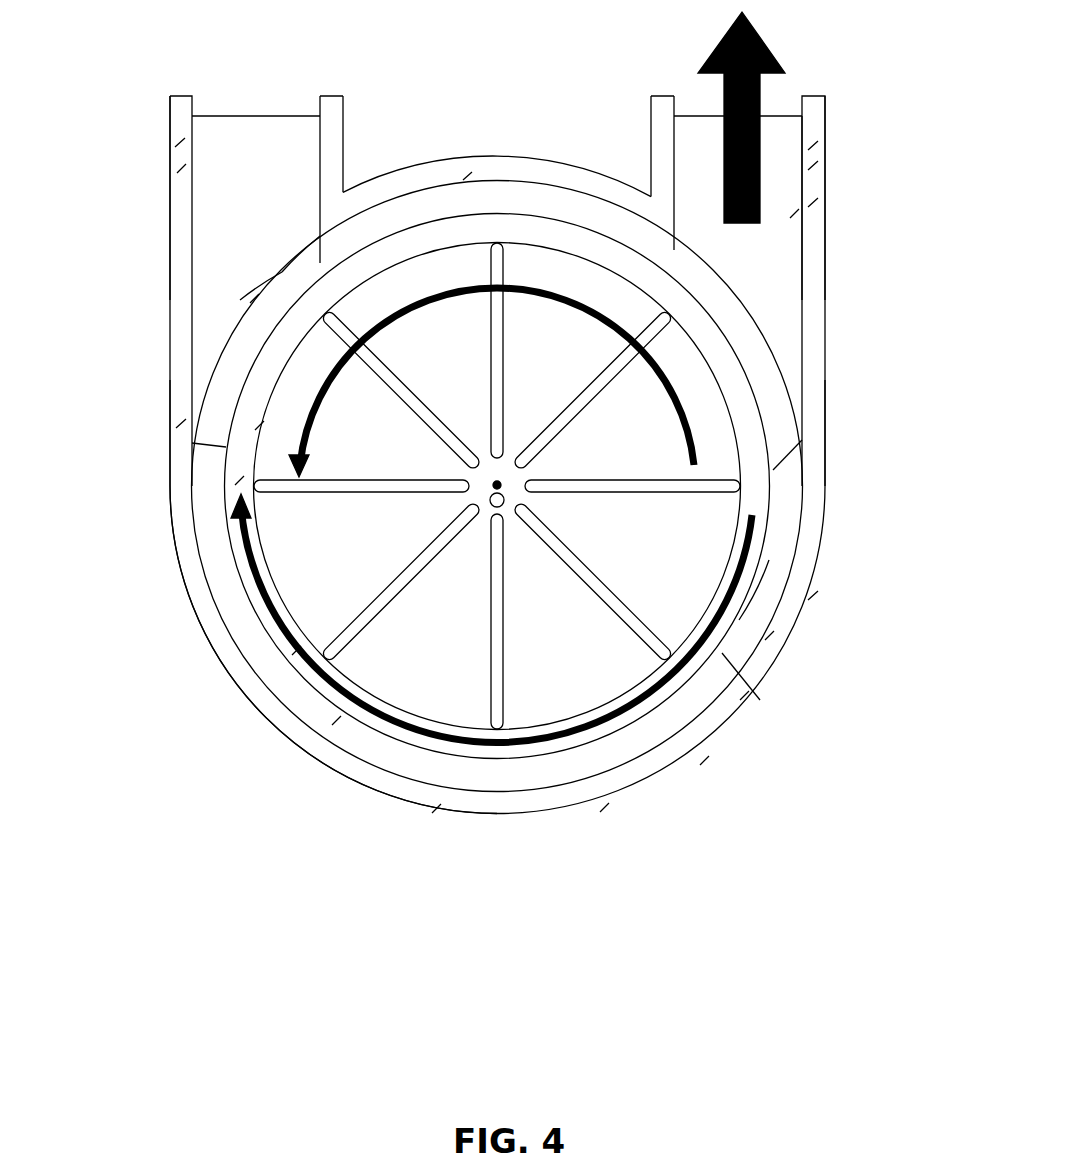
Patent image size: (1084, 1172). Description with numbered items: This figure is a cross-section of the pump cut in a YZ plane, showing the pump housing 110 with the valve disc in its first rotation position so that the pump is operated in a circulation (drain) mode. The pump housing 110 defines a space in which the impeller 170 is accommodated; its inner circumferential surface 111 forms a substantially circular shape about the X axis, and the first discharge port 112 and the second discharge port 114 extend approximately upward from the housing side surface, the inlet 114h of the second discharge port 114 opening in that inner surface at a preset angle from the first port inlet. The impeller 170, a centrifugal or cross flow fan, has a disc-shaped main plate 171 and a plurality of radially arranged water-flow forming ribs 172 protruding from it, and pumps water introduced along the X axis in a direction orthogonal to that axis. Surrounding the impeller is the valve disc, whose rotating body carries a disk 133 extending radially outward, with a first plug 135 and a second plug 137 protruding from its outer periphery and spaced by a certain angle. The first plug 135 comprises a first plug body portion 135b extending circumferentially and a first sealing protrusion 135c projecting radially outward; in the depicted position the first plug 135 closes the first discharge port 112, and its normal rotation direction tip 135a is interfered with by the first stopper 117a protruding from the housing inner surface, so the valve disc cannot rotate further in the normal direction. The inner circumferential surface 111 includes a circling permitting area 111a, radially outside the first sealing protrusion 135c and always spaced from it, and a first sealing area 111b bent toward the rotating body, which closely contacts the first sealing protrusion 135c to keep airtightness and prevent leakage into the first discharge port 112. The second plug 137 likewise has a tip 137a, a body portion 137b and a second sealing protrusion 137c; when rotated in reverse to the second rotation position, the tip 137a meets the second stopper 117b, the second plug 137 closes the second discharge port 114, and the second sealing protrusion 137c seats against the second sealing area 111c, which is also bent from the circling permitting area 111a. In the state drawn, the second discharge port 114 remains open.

The pump housing 110 is at (730, 740).
The inner circumferential surface 111 is at (213, 618).
The circling permitting area 111a is at (268, 692).
The first sealing area 111b is at (192, 443).
The second sealing area 111c is at (825, 442).
The first discharge port 112 is at (172, 178).
The second discharge port 114 is at (812, 198).
The inlet of the second discharge port 114h is at (735, 293).
The first stopper 117a is at (335, 240).
The second stopper 117b is at (667, 243).
The disk 133 is at (547, 747).
The first plug 135 is at (250, 344).
The normal rotation direction tip of the first plug 135a is at (297, 237).
The first plug body portion 135b is at (275, 293).
The first sealing protrusion 135c is at (226, 447).
The second plug 137 is at (780, 535).
The tip of the second plug 137a is at (773, 470).
The second filter middle portion 137b is at (770, 595).
The second sealing protrusion 137c is at (718, 653).
The impeller 170 is at (497, 585).
The main plate 171 is at (458, 690).
The water-flow forming ribs 172 is at (405, 500).